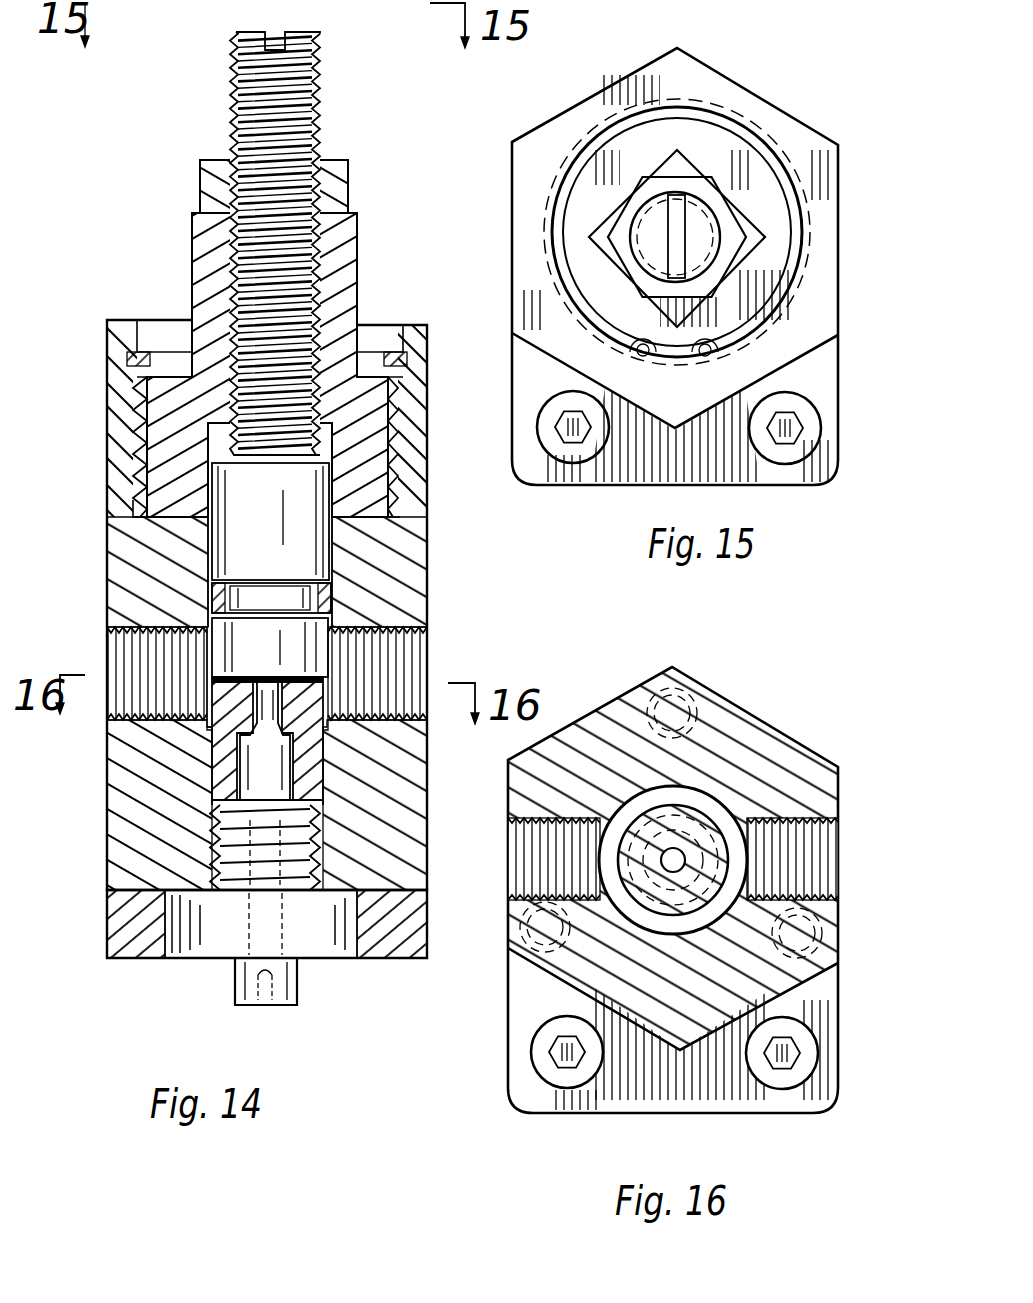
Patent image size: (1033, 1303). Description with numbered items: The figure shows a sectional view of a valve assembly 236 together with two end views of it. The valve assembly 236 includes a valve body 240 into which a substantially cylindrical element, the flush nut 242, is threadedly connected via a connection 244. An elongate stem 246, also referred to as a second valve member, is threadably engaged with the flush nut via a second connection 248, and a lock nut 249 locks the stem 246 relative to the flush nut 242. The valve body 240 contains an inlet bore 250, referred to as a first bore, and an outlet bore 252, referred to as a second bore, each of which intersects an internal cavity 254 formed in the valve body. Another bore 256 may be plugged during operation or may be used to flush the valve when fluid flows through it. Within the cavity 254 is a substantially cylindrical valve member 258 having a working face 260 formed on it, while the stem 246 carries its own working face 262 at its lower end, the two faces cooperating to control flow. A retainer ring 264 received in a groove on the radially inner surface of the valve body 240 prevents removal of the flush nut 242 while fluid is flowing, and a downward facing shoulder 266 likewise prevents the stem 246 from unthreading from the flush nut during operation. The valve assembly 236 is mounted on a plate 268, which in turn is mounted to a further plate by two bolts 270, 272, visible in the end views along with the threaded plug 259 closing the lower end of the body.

In FIG. 14, the valve assembly 236 is at (114, 302).
In FIG. 14, the valve body 240 is at (118, 385).
In FIG. 14, the flush nut 242 is at (372, 492).
In FIG. 14, the connection 244 is at (140, 420).
In FIG. 14, the elongate stem 246 is at (320, 120).
In FIG. 15, the elongate stem 246 is at (677, 238).
In FIG. 14, the connection 248 is at (230, 260).
In FIG. 14, the lock nut 249 is at (350, 185).
In FIG. 14, the inlet bore 250 is at (148, 725).
In FIG. 16, the inlet bore 250 is at (537, 870).
In FIG. 14, the outlet bore 252 is at (215, 848).
In FIG. 14, the internal cavity 254 is at (334, 618).
In FIG. 14, the bore 256 is at (342, 658).
In FIG. 16, the bore 256 is at (803, 858).
In FIG. 14, the valve member 258 is at (273, 790).
In FIG. 16, the valve member 258 is at (683, 853).
In FIG. 14, the threaded plug 259 is at (278, 793).
In FIG. 16, the threaded plug 259 is at (690, 823).
In FIG. 14, the working face 260 is at (300, 735).
In FIG. 14, the working face 262 is at (322, 750).
In FIG. 14, the retainer ring 264 is at (388, 362).
In FIG. 14, the downward facing shoulder 266 is at (135, 488).
In FIG. 15, the plate 268 is at (643, 472).
In FIG. 16, the plate 268 is at (662, 1102).
In FIG. 15, the bolt 270 is at (795, 432).
In FIG. 16, the bolt 270 is at (787, 1067).
In FIG. 15, the bolt 272 is at (557, 448).
In FIG. 16, the bolt 272 is at (550, 1057).